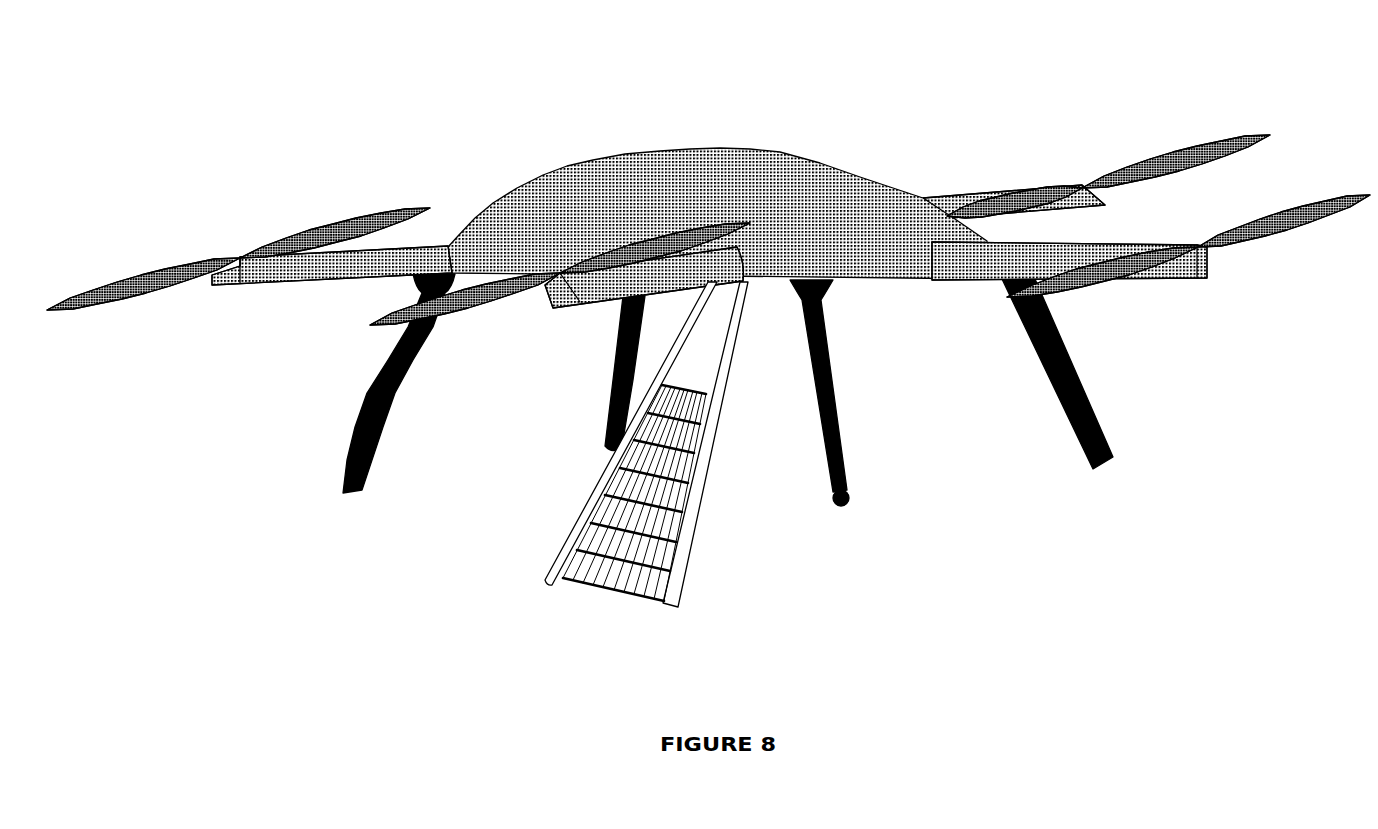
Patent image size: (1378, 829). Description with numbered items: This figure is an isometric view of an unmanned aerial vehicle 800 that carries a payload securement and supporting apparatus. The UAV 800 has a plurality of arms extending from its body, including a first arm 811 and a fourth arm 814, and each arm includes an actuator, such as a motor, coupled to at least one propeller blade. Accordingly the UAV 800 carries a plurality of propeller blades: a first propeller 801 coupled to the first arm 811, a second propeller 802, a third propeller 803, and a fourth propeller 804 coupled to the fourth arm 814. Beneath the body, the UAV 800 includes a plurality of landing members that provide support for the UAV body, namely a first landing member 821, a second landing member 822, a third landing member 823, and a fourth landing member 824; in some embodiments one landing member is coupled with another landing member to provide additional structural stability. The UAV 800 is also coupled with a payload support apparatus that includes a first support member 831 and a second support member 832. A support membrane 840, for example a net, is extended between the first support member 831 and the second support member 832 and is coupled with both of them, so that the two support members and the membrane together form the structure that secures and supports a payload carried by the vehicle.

The unmanned aerial vehicle 800 is at (718, 175).
The first propeller 801 is at (238, 235).
The second propeller 802 is at (560, 255).
The third propeller 803 is at (1108, 160).
The fourth propeller 804 is at (1188, 264).
The first arm 811 is at (332, 309).
The fourth arm 814 is at (1069, 304).
The first landing member 821 is at (383, 383).
The second landing member 822 is at (604, 373).
The third landing member 823 is at (834, 393).
The fourth landing member 824 is at (1040, 374).
The first support member 831 is at (624, 433).
The second support member 832 is at (708, 444).
The support membrane 840 is at (619, 513).